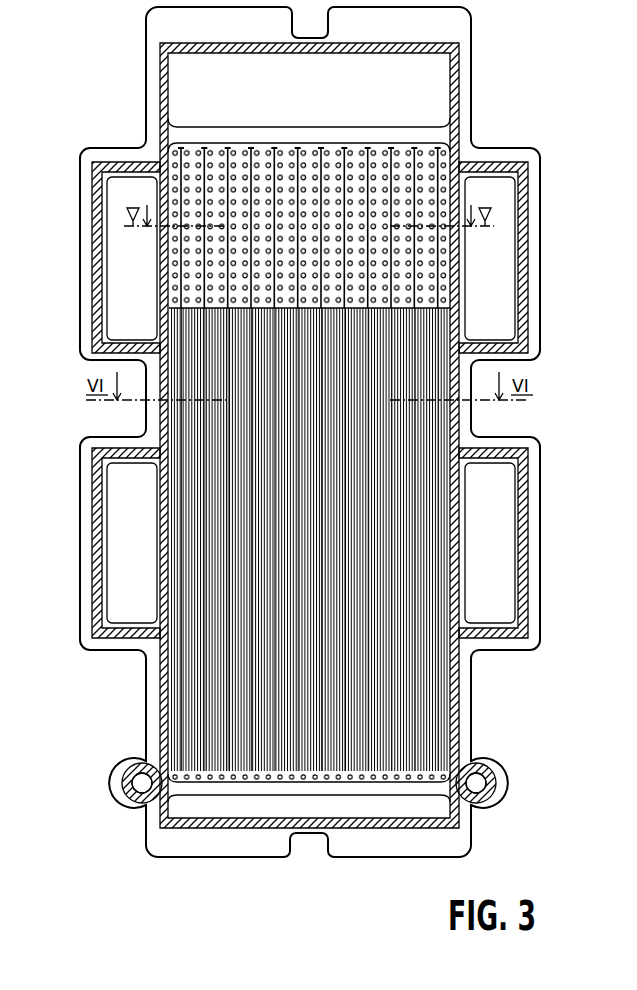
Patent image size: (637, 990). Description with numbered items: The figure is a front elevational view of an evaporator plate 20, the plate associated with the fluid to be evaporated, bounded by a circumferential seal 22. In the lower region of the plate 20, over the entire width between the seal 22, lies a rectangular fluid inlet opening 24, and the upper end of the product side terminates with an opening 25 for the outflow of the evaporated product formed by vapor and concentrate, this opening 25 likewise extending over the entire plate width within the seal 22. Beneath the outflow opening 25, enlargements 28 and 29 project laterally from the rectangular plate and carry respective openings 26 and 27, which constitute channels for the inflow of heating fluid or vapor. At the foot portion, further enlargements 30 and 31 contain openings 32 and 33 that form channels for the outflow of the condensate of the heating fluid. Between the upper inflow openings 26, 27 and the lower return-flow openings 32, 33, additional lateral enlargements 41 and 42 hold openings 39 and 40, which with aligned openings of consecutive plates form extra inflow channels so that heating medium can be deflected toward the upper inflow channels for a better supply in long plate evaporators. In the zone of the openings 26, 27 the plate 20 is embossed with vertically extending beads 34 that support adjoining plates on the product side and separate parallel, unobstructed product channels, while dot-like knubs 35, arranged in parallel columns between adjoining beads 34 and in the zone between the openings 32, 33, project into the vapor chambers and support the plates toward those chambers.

The plate 20 is at (134, 51).
The circumferential seal 22 is at (168, 86).
The fluid inlet opening 24 is at (257, 808).
The opening for the outflow of the evaporated product 25 is at (433, 82).
The opening 26 is at (118, 212).
The opening 27 is at (500, 196).
The enlargement 28 is at (79, 252).
The enlargement 29 is at (540, 290).
The enlargement 30 is at (127, 762).
The enlargement 31 is at (492, 766).
The opening 32 is at (143, 786).
The opening 33 is at (480, 787).
The embossed beads 34 is at (420, 278).
The knubs 35 is at (172, 264).
The opening 39 is at (115, 592).
The opening 40 is at (502, 537).
The lateral enlargement 41 is at (79, 607).
The lateral enlargement 42 is at (540, 607).